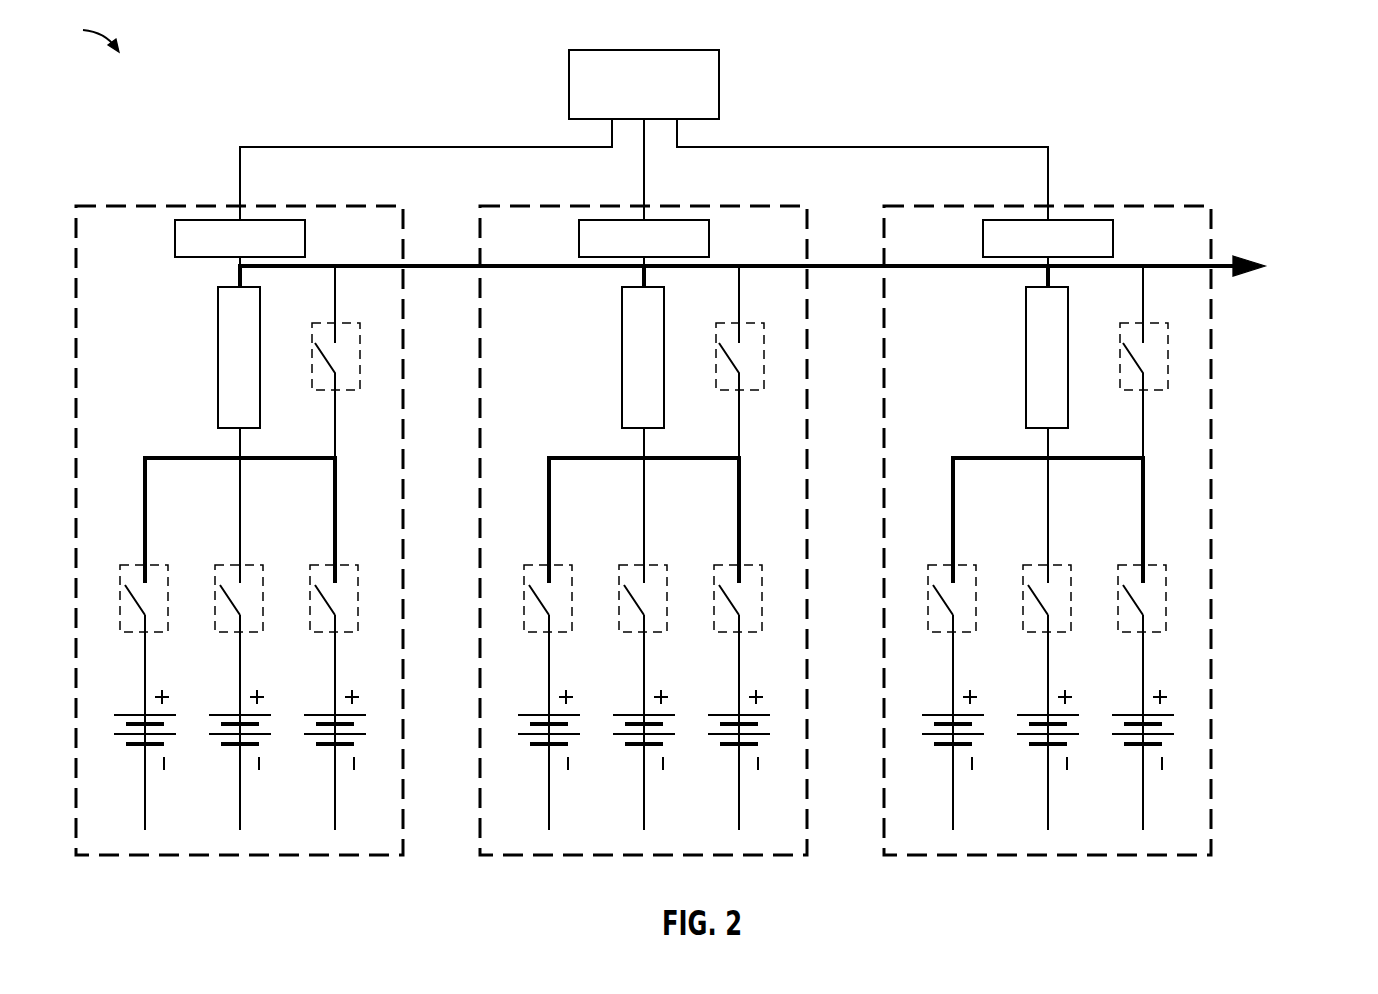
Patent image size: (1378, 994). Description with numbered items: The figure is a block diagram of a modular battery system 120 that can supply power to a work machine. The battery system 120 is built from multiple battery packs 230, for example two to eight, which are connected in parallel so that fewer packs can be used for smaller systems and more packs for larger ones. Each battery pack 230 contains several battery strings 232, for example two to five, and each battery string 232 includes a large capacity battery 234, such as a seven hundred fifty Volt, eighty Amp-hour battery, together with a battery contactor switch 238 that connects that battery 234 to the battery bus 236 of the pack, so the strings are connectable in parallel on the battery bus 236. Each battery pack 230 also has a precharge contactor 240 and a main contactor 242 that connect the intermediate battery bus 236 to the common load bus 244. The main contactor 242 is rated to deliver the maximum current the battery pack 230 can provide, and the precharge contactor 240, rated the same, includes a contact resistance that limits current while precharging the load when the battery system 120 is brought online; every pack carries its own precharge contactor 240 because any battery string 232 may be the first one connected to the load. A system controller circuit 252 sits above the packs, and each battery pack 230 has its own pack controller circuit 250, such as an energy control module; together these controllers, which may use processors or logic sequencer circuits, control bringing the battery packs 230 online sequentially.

The modular battery system 120 is at (79, 32).
The system controller circuit 252 is at (597, 50).
The battery pack 230 is at (137, 205).
The pack controller circuit 250 is at (305, 233).
The load bus 244 is at (1236, 261).
The precharge contactor 240 is at (216, 353).
The main contactor 242 is at (312, 341).
The battery bus 236 is at (187, 456).
The battery string 232 is at (147, 520).
The battery contactor switch 238 is at (120, 600).
The battery 234 is at (139, 748).